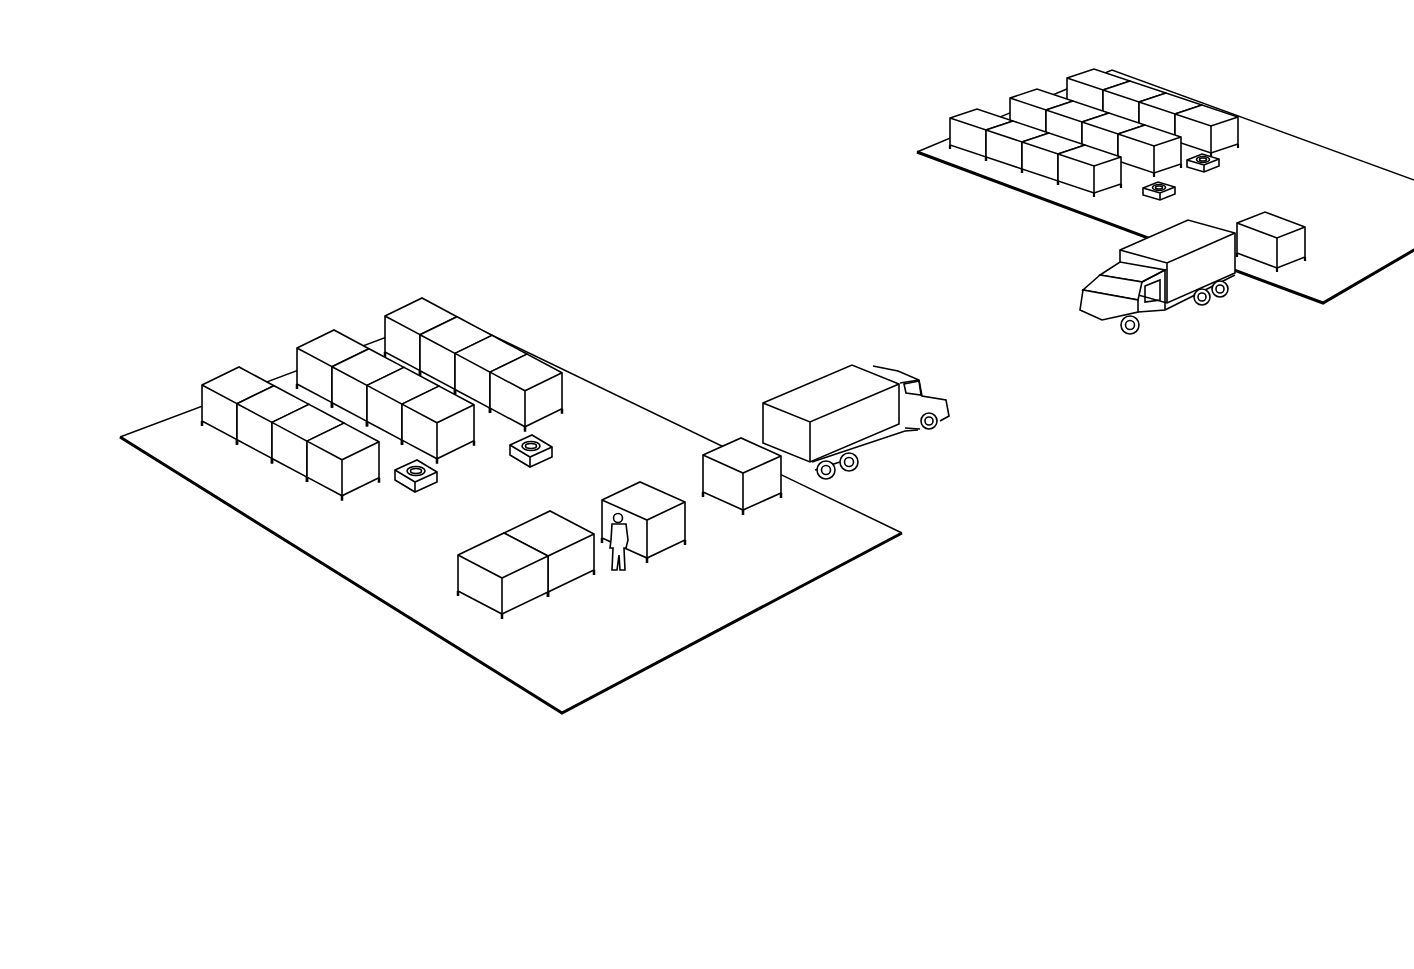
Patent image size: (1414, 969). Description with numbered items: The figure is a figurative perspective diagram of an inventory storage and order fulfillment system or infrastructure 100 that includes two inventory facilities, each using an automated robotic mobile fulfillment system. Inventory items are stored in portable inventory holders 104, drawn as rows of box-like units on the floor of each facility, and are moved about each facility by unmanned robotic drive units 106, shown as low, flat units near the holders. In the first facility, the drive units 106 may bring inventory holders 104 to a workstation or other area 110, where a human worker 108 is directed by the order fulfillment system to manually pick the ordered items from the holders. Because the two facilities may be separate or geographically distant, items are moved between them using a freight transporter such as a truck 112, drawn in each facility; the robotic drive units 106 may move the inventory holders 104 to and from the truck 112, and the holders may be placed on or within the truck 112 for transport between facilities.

The inventory storage and order fulfillment system 100 is at (423, 146).
The portable inventory holder 104 is at (528, 359).
The robotic drive unit 106 is at (520, 455).
The human worker 108 is at (618, 572).
The workstation 110 is at (585, 622).
The truck 112 is at (808, 393).